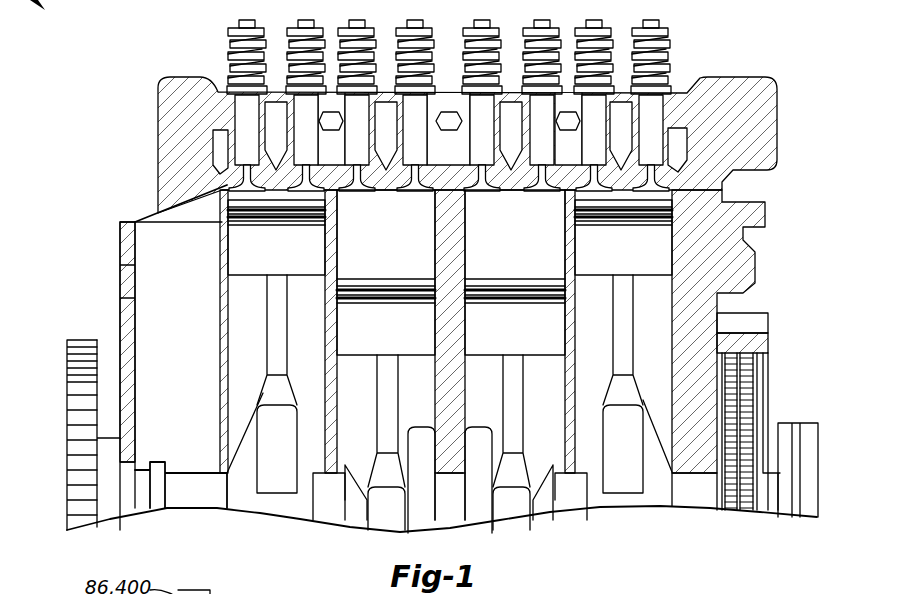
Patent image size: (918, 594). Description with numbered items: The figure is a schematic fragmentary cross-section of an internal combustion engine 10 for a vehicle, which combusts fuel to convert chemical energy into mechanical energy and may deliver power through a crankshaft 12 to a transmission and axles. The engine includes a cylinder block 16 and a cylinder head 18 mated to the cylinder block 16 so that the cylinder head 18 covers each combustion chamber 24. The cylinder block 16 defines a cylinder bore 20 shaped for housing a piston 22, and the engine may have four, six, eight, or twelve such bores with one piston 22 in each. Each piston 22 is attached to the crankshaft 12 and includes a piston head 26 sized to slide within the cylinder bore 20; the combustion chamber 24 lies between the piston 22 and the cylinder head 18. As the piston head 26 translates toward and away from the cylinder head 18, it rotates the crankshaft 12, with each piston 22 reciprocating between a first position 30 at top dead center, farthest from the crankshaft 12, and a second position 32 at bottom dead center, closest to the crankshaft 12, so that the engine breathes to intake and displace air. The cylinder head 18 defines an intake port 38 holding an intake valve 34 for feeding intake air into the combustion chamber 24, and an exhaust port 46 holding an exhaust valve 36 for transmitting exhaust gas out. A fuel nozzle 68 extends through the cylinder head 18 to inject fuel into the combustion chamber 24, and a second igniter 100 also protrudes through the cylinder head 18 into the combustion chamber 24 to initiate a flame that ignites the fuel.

The internal combustion engine 10 is at (70, 593).
The crankshaft 12 is at (192, 495).
The cylinder block 16 is at (756, 258).
The cylinder head 18 is at (777, 127).
The cylinder bore 20 is at (243, 396).
The piston 22 is at (273, 328).
The combustion chamber 24 is at (354, 268).
The piston head 26 is at (240, 252).
The first position 30 is at (668, 281).
The second position 32 is at (558, 362).
The intake valve 34 is at (247, 176).
The exhaust valve 36 is at (308, 187).
The intake port 38 is at (578, 173).
The exhaust port 46 is at (676, 169).
The fuel nozzle 68 is at (383, 200).
The second igniter 100 is at (388, 200).